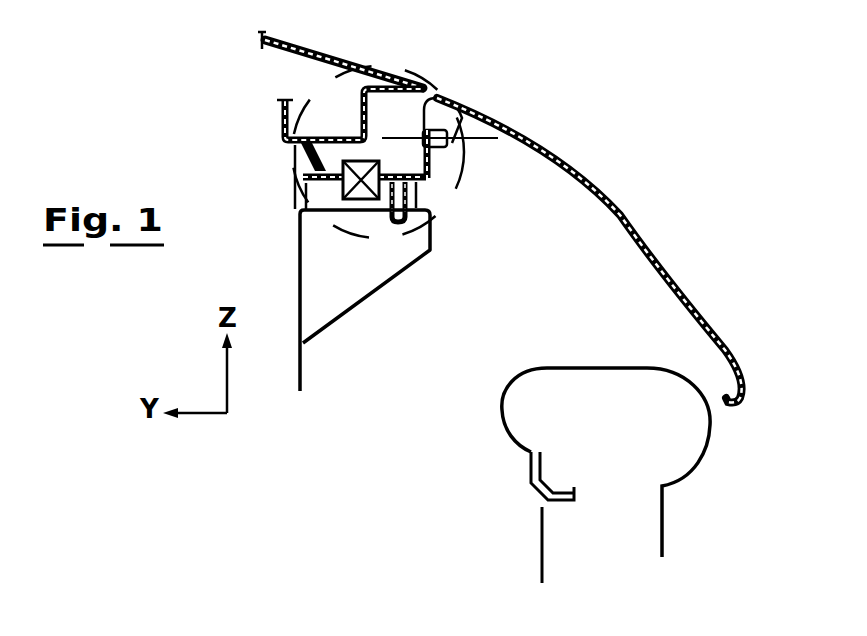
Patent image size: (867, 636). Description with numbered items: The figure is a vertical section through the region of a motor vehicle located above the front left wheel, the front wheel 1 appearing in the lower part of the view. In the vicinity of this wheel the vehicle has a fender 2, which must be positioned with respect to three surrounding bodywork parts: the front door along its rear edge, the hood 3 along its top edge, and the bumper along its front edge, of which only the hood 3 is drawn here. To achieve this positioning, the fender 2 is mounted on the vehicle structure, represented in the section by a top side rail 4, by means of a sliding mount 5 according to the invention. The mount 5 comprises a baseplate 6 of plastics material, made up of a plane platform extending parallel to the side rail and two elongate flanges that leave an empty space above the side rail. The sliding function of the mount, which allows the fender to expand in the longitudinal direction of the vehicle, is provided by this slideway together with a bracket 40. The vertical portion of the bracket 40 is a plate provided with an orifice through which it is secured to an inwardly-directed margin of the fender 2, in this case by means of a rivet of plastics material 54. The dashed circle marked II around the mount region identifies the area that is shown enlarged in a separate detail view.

The front wheel 1 is at (667, 447).
The fender 2 is at (638, 229).
The hood 3 is at (292, 50).
The top side rail 4 is at (349, 277).
The sliding mount 5 is at (276, 167).
The baseplate 6 is at (430, 188).
The bracket 40 is at (433, 168).
The rivet of plastics material 54 is at (452, 108).
The detail view indicator II is at (414, 67).